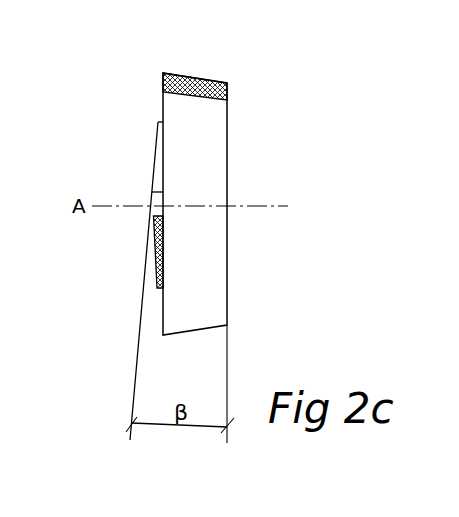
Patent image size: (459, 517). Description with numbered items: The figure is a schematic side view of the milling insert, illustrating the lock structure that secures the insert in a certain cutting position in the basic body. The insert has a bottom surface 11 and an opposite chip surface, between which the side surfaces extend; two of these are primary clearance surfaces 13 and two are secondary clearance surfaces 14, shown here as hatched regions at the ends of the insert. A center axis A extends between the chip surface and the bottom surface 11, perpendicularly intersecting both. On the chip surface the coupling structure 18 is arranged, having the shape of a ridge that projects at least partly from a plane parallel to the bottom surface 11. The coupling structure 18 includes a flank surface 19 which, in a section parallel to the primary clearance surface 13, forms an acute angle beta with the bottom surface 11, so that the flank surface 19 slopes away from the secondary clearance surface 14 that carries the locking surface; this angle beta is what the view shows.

The bottom surface 11 is at (227, 139).
The primary clearance surface 13 is at (209, 249).
The secondary clearance surface 14 is at (197, 62).
The coupling structure 18 is at (158, 160).
The flank surface 19 is at (153, 135).